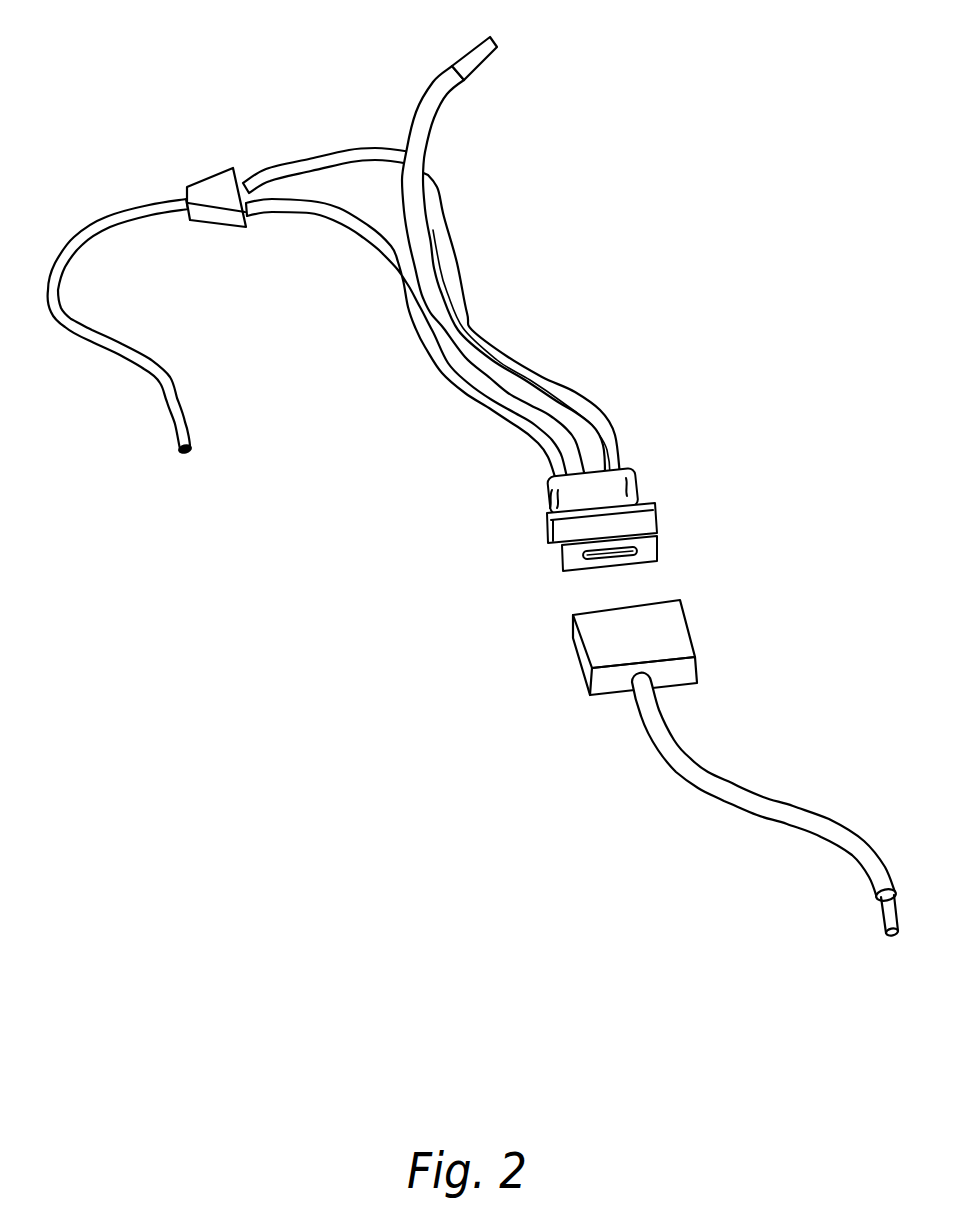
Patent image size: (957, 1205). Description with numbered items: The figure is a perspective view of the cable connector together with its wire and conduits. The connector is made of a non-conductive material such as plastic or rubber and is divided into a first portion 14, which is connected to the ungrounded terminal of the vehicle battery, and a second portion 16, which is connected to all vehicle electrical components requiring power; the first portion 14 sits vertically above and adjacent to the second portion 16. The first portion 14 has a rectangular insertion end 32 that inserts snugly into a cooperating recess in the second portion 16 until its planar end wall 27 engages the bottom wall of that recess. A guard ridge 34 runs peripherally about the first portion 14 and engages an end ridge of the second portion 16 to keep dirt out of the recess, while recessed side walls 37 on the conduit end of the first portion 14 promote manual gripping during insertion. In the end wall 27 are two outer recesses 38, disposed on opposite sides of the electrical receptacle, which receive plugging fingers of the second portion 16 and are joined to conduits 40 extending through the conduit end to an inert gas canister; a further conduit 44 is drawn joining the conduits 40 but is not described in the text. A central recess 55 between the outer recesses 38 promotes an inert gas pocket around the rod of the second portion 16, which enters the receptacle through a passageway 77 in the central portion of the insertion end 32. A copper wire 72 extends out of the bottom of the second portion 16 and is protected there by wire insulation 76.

The first portion 14 is at (598, 516).
The second portion 16 is at (668, 636).
The planar end wall 27 is at (652, 553).
The insertion end 32 is at (643, 527).
The guard ridge 34 is at (660, 503).
The recessed side walls 37 is at (546, 505).
The outer recesses 38 is at (627, 560).
The conduits 40 is at (97, 226).
The tube 44 is at (440, 103).
The central recess 55 is at (632, 548).
The copper wire 72 is at (886, 920).
The wire insulation 76 is at (765, 820).
The passageway 77 is at (607, 568).